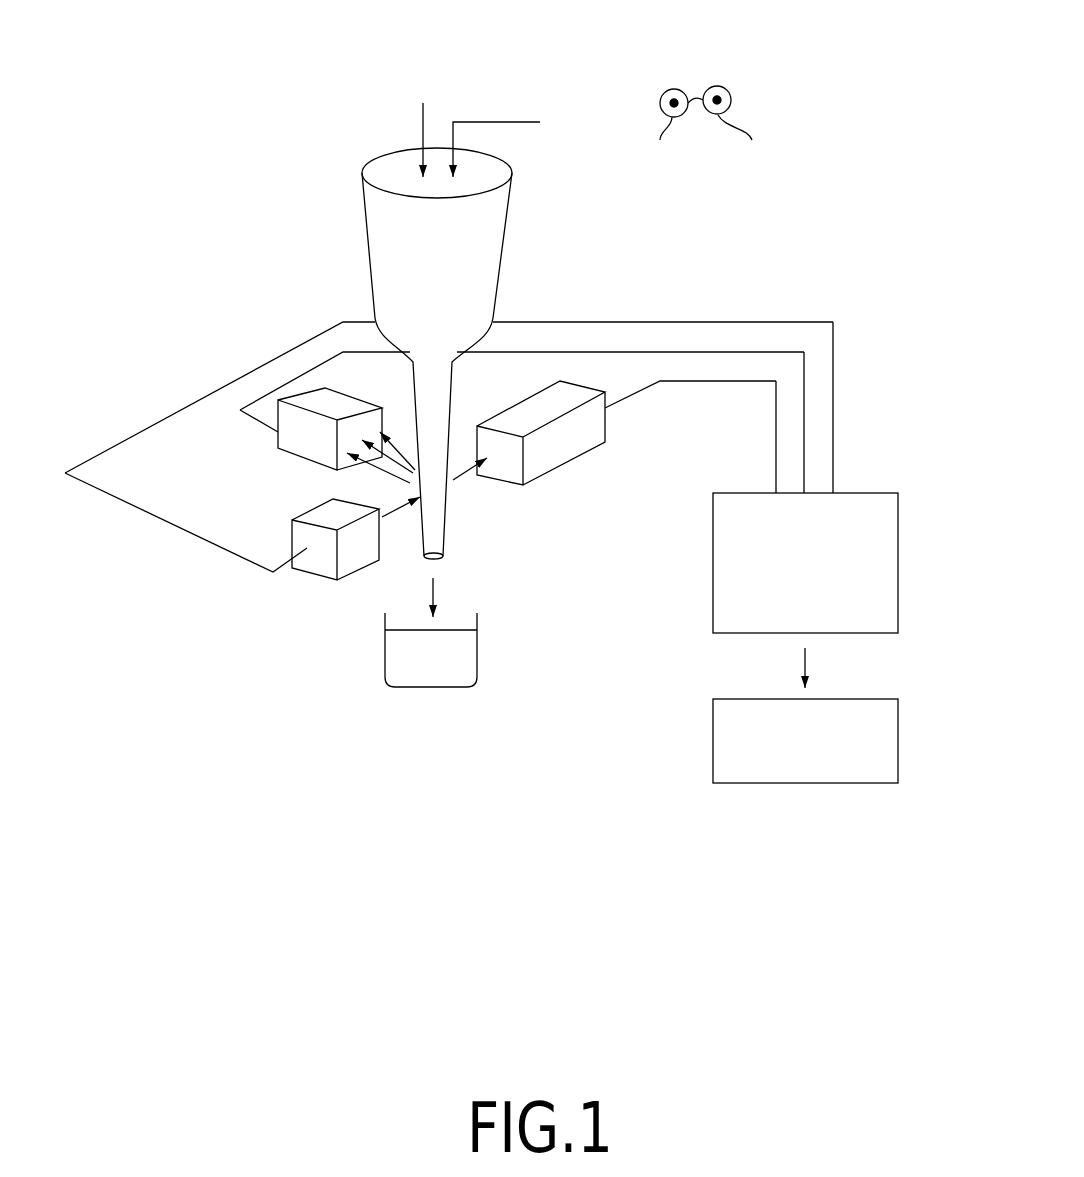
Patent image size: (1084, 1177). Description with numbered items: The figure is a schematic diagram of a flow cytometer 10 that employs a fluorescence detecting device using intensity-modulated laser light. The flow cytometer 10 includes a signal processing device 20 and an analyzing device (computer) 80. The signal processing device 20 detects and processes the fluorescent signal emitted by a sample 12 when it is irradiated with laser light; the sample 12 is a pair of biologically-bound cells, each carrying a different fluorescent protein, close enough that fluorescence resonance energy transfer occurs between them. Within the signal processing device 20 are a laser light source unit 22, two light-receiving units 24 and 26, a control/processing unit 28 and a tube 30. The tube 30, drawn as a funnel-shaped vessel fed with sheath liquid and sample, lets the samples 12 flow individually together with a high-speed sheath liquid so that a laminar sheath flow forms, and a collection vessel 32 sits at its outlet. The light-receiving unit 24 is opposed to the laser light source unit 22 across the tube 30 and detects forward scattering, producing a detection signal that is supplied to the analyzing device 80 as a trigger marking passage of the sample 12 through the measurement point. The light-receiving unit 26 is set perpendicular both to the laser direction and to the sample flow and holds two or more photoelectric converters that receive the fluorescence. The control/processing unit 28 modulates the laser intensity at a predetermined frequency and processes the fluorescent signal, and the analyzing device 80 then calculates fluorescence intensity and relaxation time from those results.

The flow cytometer 10 is at (278, 725).
The sample 12 is at (713, 68).
The signal processing device 20 is at (527, 558).
The laser light source unit 22 is at (308, 575).
The light-receiving unit 24 is at (573, 462).
The light-receiving unit 26 is at (288, 452).
The control/processing unit 28 is at (873, 493).
The tube 30 is at (450, 385).
The collection vessel 32 is at (428, 688).
The analyzing device (computer) 80 is at (803, 784).